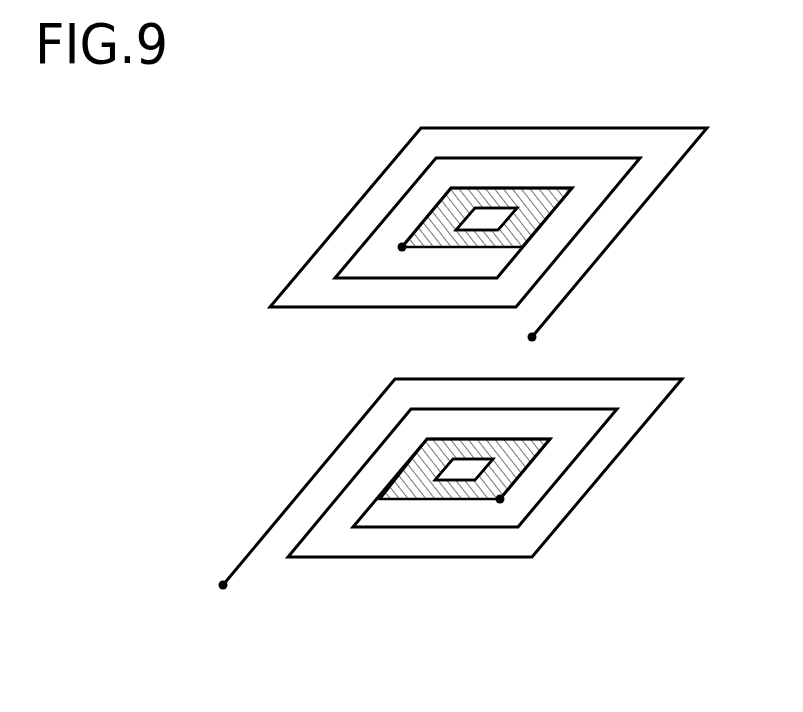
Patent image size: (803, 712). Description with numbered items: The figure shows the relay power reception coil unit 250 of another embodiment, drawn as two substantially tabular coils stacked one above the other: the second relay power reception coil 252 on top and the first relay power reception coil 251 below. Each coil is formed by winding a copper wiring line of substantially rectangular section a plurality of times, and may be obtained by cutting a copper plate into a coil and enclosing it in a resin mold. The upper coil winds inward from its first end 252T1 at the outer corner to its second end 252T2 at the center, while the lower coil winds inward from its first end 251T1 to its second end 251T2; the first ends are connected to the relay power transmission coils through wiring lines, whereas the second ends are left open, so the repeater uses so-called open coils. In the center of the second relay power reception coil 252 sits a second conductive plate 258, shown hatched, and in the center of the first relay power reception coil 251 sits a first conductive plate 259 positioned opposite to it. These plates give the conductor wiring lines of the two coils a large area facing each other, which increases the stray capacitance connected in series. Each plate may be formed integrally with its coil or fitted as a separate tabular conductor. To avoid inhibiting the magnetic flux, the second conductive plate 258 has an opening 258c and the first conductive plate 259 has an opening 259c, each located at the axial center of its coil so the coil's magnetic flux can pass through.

The relay power reception coil unit 250 is at (200, 175).
The second relay power reception coil 252 is at (360, 201).
The first relay power reception coil 251 is at (343, 443).
The second conductive plate 258 is at (534, 205).
The opening 258c is at (488, 218).
The first conductive plate 259 is at (400, 499).
The opening 259c is at (453, 473).
The first end 252T1 is at (530, 337).
The second end 252T2 is at (402, 247).
The first end 251T1 is at (223, 585).
The second end 251T2 is at (500, 499).